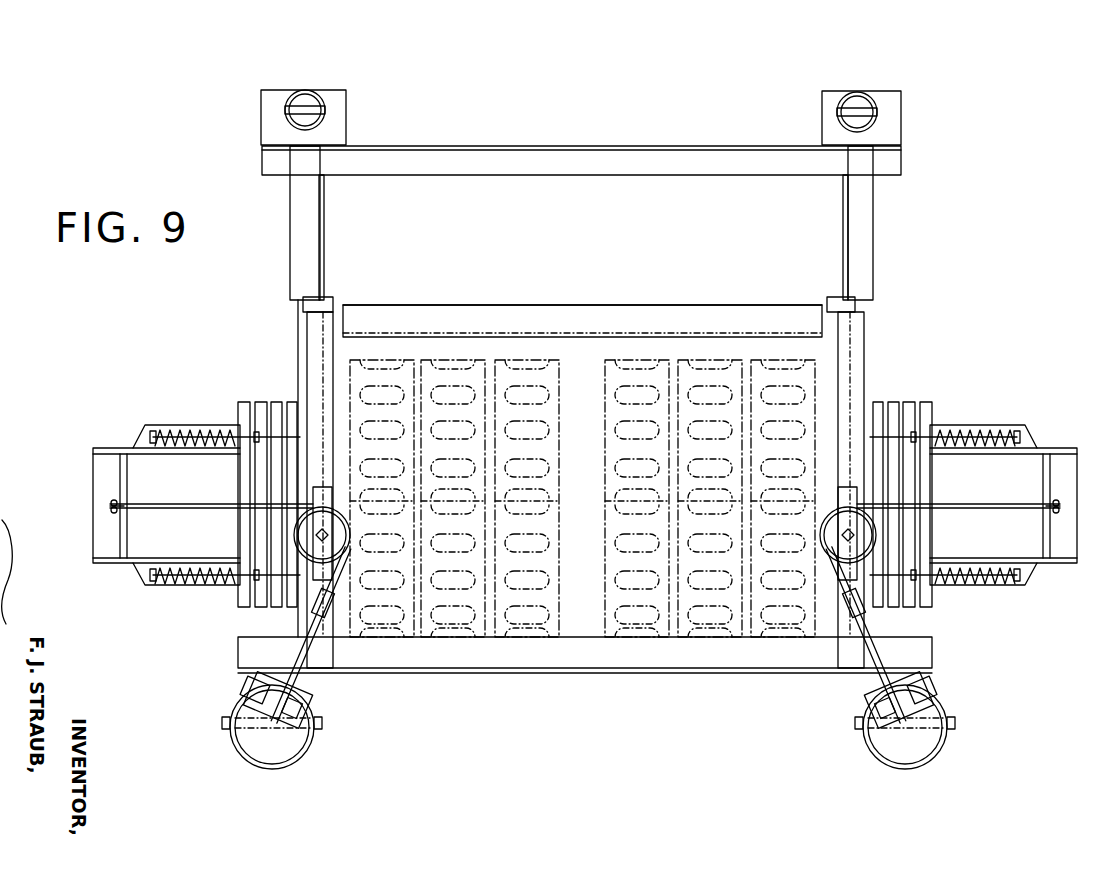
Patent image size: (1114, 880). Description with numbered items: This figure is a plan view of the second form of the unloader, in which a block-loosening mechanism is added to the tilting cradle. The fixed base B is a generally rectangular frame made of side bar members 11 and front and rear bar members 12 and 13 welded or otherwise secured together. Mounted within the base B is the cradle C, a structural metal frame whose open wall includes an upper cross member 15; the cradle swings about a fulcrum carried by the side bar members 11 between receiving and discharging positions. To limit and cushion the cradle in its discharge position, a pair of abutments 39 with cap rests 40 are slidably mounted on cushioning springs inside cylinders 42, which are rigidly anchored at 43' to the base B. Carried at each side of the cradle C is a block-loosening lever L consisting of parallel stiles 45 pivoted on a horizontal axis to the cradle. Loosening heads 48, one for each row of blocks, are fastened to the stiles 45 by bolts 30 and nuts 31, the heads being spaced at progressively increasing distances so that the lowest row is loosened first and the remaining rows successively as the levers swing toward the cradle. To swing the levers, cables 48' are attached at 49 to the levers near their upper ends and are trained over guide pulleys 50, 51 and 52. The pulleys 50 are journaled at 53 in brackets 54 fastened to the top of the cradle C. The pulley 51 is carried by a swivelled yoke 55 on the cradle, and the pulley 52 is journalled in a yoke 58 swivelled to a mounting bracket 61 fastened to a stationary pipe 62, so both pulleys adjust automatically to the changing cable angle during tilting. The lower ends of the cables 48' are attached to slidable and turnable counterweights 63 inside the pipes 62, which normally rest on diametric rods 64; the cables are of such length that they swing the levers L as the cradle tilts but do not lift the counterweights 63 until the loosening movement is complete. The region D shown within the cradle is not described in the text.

The side bar member 11 is at (290, 243).
The front bar member 12 is at (628, 658).
The rear bar member 13 is at (592, 160).
The upper cross member 15 is at (662, 306).
The bolt 30 is at (258, 434).
The nut 31 is at (200, 428).
The abutment 39 is at (300, 98).
The cap rest 40 is at (325, 110).
The cylinder 42 is at (286, 120).
The anchorage 43' is at (602, 81).
The stile 45 is at (138, 432).
The loosening head 48 is at (585, 478).
The cable 48' is at (585, 597).
The cable attachment 49 is at (108, 507).
The guide pulley 50 is at (342, 551).
The guide pulley 51 is at (330, 624).
The guide pulley 52 is at (252, 694).
The pulley journal 53 is at (328, 536).
The bracket 54 is at (326, 498).
The yoke 55 is at (312, 602).
The yoke 58 is at (256, 678).
The mounting bracket 61 is at (312, 707).
The stationary pipe 62 is at (310, 752).
The counterweight 63 is at (262, 748).
The diametric rod 64 is at (222, 724).
The base B is at (330, 262).
The cradle C is at (493, 306).
The perforated panel D is at (551, 432).
The block-loosening lever L is at (92, 477).